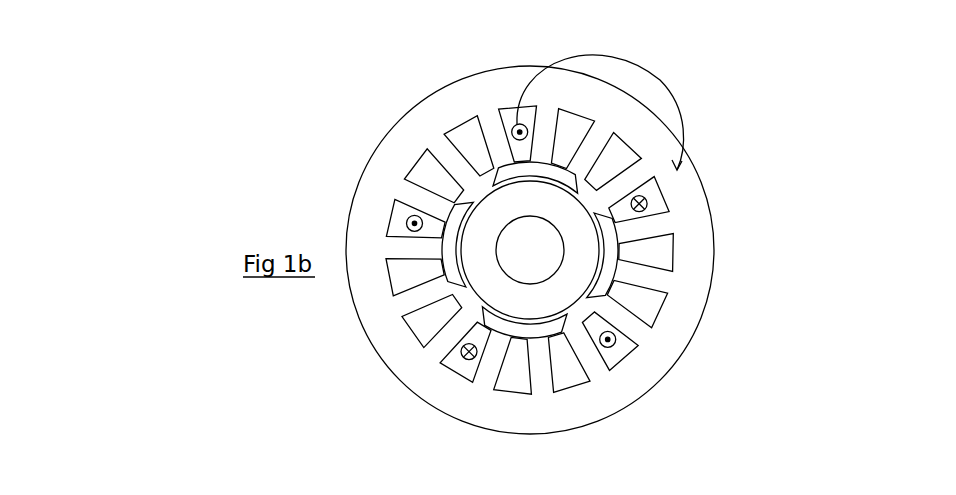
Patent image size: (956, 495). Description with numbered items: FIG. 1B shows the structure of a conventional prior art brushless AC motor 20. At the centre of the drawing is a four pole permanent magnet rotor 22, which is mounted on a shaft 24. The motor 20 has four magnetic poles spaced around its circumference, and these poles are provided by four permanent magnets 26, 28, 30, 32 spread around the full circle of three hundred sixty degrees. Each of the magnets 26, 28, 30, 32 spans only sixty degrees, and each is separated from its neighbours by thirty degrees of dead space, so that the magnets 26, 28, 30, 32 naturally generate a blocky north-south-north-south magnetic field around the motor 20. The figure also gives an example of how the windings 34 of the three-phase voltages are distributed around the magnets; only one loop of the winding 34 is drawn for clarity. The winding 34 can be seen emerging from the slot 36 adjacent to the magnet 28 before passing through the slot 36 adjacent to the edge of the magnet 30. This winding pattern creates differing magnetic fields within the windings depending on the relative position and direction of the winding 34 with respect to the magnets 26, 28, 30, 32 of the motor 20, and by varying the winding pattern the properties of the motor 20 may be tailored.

The brushless AC motor 20 is at (760, 262).
The permanent magnet rotor 22 is at (594, 263).
The shaft 24 is at (544, 263).
The permanent magnet 26 is at (455, 284).
The permanent magnet 28 is at (502, 176).
The permanent magnet 30 is at (612, 268).
The permanent magnet 32 is at (535, 330).
The winding 34 is at (640, 63).
The slot 36 is at (656, 206).